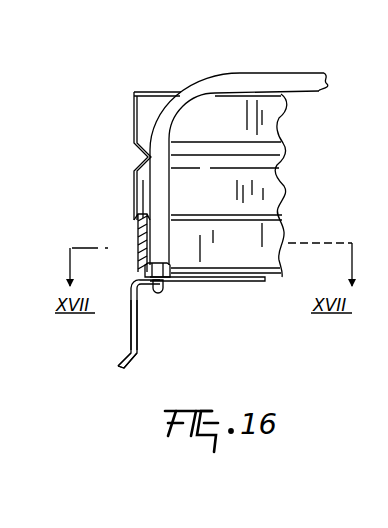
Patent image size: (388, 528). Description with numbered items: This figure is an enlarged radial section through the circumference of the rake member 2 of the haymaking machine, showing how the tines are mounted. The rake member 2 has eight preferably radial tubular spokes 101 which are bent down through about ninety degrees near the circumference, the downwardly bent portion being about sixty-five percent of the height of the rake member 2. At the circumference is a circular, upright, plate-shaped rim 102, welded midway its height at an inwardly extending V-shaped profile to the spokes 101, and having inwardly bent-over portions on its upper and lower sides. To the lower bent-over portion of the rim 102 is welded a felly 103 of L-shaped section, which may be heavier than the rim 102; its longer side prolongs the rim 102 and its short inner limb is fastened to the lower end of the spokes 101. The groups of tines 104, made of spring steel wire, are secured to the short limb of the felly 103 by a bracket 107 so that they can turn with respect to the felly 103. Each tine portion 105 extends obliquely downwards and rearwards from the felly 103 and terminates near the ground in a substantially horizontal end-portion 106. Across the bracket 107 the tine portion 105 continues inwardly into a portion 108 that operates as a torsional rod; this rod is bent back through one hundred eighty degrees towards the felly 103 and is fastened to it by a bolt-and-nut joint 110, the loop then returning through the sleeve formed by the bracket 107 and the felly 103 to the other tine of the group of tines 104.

The rake member 2 is at (289, 188).
The tubular spoke 101 is at (315, 92).
The rim 102 is at (137, 101).
The felly 103 is at (139, 232).
The group of tines 104 is at (129, 325).
The tine portion 105 is at (138, 339).
The end-portion 106 is at (127, 365).
The bracket 107 is at (170, 283).
The torsional rod portion 108 is at (262, 282).
The bolt-and-nut joint 110 is at (163, 266).